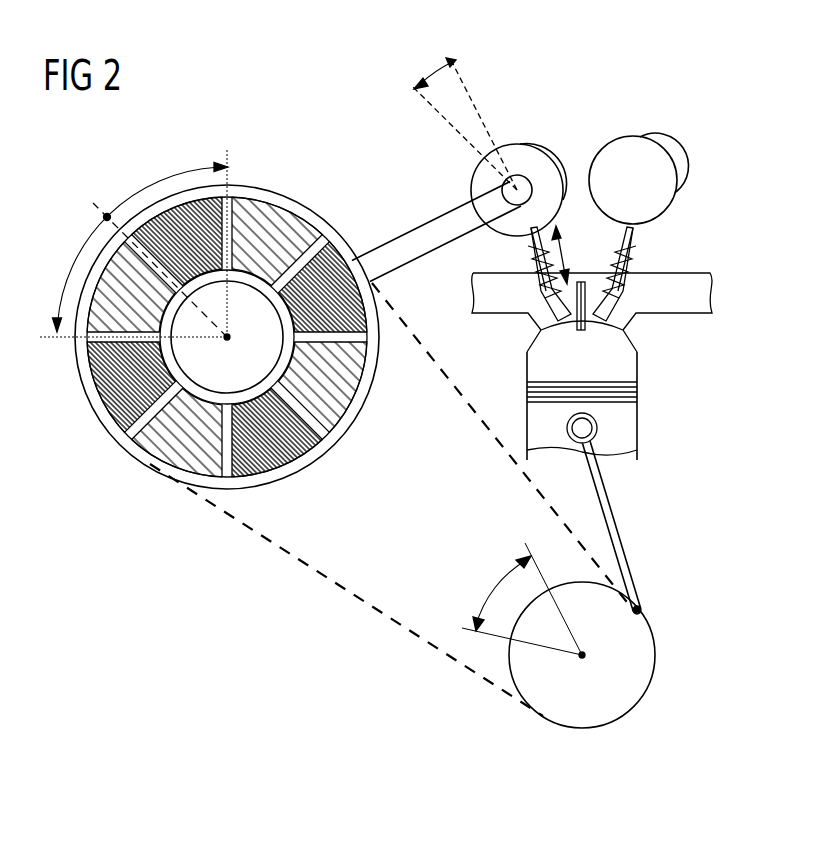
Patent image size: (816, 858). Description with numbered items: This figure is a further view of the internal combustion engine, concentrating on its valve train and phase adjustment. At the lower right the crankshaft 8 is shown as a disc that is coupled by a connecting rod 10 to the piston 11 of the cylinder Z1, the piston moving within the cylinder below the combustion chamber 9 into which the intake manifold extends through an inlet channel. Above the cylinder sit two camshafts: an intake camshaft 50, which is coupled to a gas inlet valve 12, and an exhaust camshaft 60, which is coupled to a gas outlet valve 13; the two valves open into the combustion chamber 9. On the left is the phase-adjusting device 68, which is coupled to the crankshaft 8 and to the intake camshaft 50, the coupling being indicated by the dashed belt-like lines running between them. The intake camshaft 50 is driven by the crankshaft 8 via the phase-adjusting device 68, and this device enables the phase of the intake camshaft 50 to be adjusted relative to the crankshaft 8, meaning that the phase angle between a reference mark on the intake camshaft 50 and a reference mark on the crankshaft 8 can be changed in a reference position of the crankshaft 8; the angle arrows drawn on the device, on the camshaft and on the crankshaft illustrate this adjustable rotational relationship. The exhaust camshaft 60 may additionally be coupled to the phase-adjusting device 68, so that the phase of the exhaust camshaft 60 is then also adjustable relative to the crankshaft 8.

The phase-adjusting device 68 is at (117, 432).
The intake camshaft 50 is at (512, 157).
The exhaust camshaft 60 is at (618, 150).
The gas inlet valve 12 is at (538, 268).
The gas outlet valve 13 is at (630, 250).
The cylinder Z1 is at (640, 359).
The combustion chamber 9 is at (625, 373).
The piston 11 is at (632, 423).
The connecting rod 10 is at (625, 540).
The crankshaft 8 is at (645, 662).